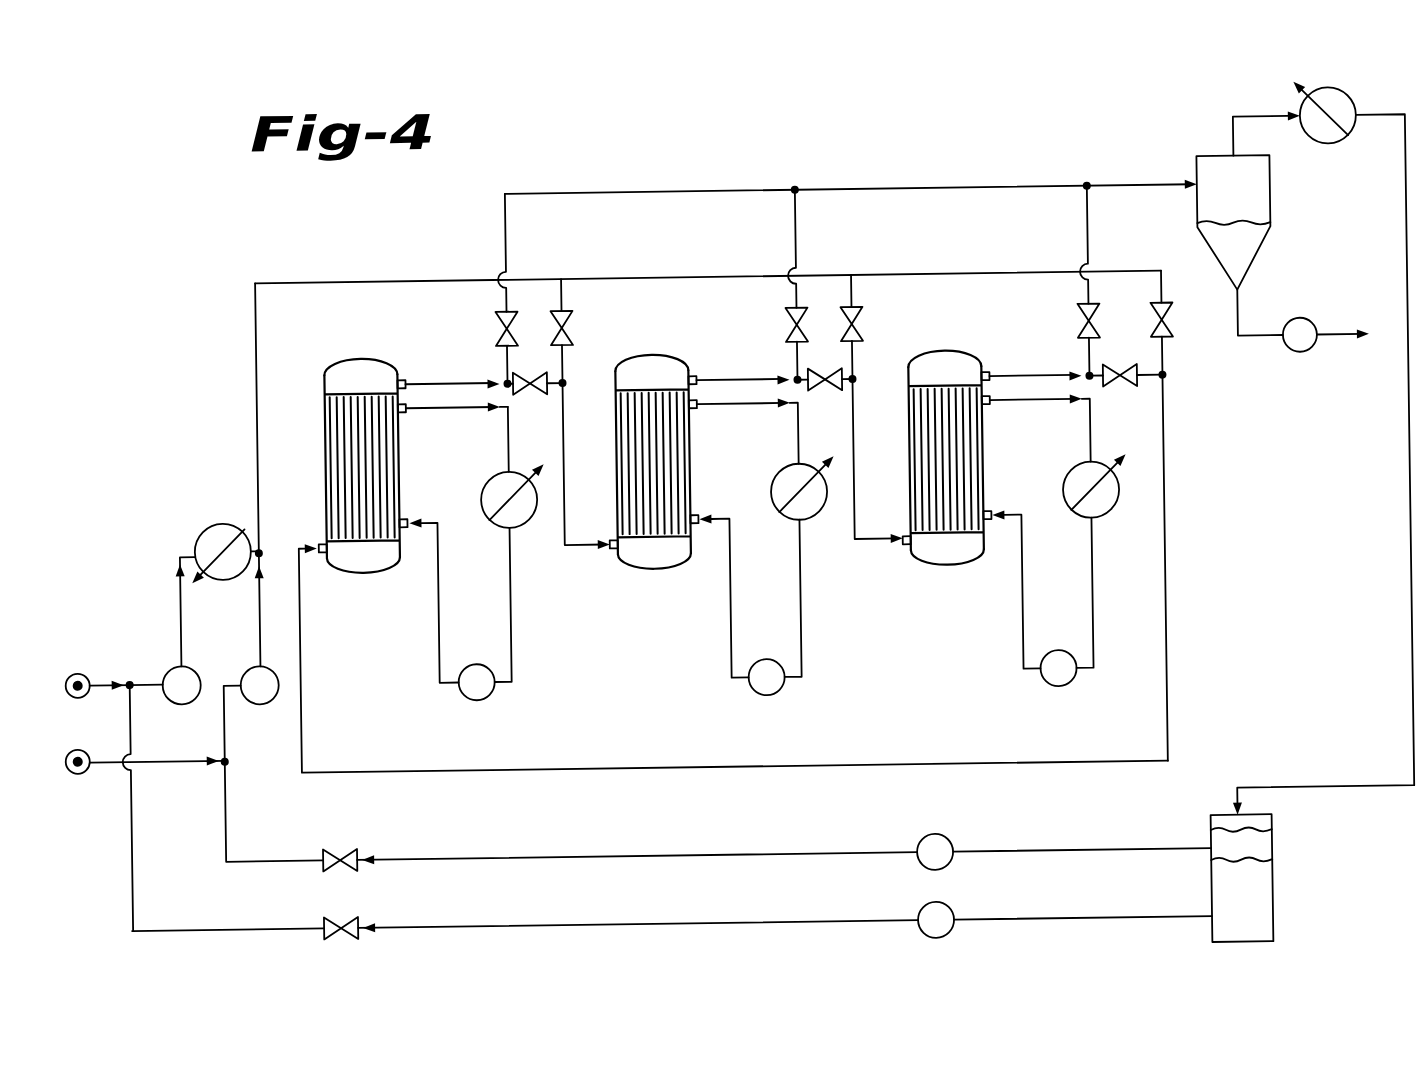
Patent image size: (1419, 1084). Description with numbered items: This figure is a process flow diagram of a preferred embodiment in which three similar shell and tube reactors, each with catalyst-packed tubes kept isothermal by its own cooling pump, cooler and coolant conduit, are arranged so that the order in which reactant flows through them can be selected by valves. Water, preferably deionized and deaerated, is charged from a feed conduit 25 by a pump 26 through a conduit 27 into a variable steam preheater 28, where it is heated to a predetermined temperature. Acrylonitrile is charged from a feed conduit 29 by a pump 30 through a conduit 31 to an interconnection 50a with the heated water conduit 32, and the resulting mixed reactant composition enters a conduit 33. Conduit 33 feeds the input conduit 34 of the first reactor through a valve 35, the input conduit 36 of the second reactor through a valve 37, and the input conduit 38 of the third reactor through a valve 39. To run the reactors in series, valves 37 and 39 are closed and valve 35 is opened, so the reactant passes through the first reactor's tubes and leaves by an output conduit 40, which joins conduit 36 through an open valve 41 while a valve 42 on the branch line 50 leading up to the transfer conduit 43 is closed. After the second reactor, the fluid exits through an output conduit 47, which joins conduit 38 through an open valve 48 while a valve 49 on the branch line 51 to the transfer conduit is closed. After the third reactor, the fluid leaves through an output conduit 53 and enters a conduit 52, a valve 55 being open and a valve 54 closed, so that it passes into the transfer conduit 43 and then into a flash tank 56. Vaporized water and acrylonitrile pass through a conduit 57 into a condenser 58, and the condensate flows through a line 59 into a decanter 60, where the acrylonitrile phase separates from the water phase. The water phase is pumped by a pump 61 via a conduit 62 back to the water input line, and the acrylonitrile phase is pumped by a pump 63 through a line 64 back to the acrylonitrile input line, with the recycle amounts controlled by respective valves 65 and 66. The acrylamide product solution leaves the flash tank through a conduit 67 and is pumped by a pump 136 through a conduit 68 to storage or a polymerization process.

The feed conduit 25 is at (98, 667).
The pump 26 is at (178, 697).
The conduit 27 is at (176, 583).
The variable steam preheater 28 is at (208, 520).
The feed conduit 29 is at (92, 766).
The pump 30 is at (258, 698).
The conduit 31 is at (258, 635).
The heated water conduit 32 is at (252, 575).
The conduit 33 is at (388, 272).
The input conduit 34 is at (620, 765).
The valve 35 is at (1172, 331).
The input conduit 36 is at (565, 494).
The valve 37 is at (571, 318).
The input conduit 38 is at (858, 480).
The valve 39 is at (863, 318).
The output conduit 40 is at (427, 378).
The valve 41 is at (528, 389).
The valve 42 is at (498, 320).
The transfer conduit 43 is at (635, 190).
The output conduit 47 is at (710, 370).
The valve 48 is at (822, 390).
The valve 49 is at (790, 330).
The line to header 50 is at (511, 242).
The interconnection 50a is at (261, 544).
The line to header 51 is at (803, 238).
The conduit 52 is at (1095, 240).
The output conduit 53 is at (1030, 378).
The valve 54 is at (1126, 392).
The valve 55 is at (1099, 329).
The flash tank 56 is at (1278, 199).
The conduit 57 is at (1250, 122).
The condenser 58 is at (1352, 100).
The line 59 is at (1410, 243).
The decanter 60 is at (1268, 918).
The pump 61 is at (943, 912).
The conduit 62 is at (740, 907).
The pump 63 is at (943, 840).
The line 64 is at (736, 840).
The valve 65 is at (348, 913).
The valve 66 is at (344, 845).
The conduit 67 is at (1242, 320).
The conduit 68 is at (1338, 340).
The pump 136 is at (1306, 360).